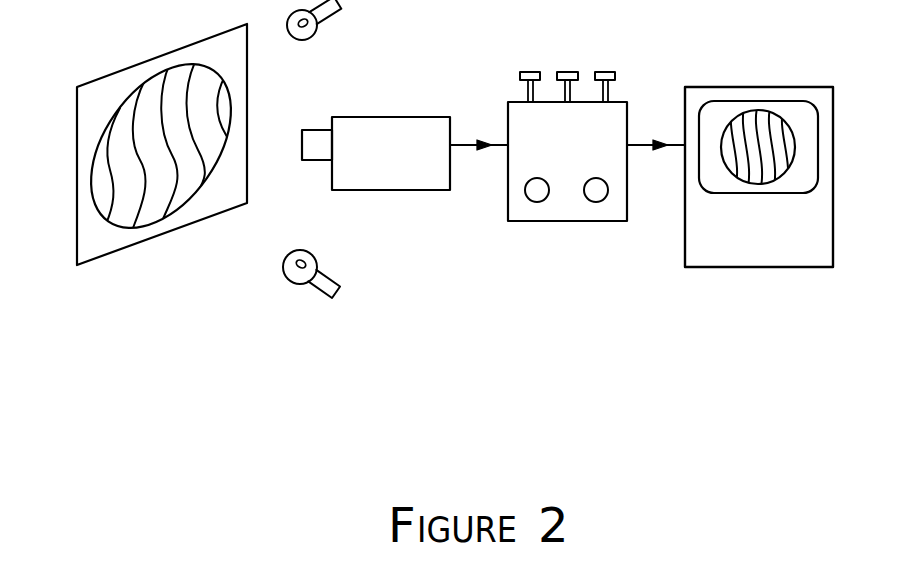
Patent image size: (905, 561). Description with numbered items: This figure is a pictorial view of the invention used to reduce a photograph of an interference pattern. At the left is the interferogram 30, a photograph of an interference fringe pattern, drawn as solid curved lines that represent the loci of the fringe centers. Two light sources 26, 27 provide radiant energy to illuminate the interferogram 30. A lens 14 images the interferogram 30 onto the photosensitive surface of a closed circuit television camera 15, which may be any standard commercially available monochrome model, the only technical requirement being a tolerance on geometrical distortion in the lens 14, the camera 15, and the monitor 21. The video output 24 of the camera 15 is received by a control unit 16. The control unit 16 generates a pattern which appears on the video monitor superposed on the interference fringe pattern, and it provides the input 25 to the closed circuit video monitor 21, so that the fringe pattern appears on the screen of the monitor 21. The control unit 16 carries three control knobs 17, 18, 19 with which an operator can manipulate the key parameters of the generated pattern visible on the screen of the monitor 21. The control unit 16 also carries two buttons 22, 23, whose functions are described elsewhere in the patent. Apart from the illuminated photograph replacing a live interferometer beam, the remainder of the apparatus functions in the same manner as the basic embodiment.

The interferogram 30 is at (121, 70).
The light source 27 is at (334, 17).
The light source 26 is at (317, 249).
The lens 14 is at (310, 130).
The closed circuit television camera 15 is at (388, 117).
The video output 24 is at (468, 140).
The control unit 16 is at (552, 208).
The control knob 17 is at (532, 72).
The control knob 18 is at (565, 72).
The control knob 19 is at (613, 72).
The button 22 is at (525, 190).
The button 23 is at (608, 190).
The input 25 is at (645, 140).
The closed circuit video monitor 21 is at (725, 87).